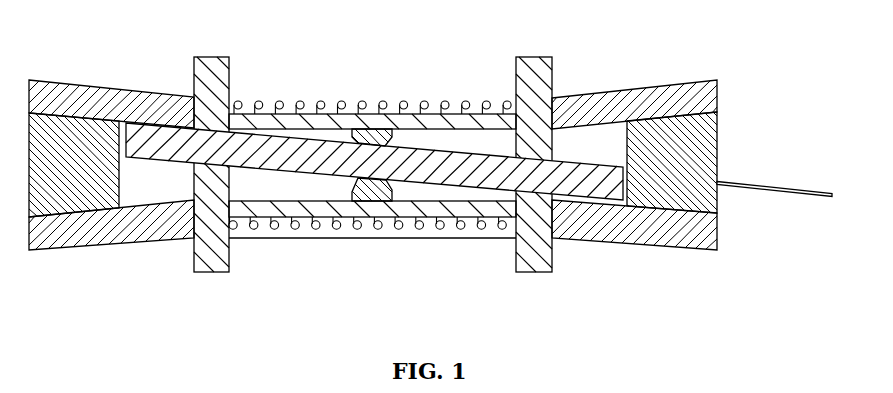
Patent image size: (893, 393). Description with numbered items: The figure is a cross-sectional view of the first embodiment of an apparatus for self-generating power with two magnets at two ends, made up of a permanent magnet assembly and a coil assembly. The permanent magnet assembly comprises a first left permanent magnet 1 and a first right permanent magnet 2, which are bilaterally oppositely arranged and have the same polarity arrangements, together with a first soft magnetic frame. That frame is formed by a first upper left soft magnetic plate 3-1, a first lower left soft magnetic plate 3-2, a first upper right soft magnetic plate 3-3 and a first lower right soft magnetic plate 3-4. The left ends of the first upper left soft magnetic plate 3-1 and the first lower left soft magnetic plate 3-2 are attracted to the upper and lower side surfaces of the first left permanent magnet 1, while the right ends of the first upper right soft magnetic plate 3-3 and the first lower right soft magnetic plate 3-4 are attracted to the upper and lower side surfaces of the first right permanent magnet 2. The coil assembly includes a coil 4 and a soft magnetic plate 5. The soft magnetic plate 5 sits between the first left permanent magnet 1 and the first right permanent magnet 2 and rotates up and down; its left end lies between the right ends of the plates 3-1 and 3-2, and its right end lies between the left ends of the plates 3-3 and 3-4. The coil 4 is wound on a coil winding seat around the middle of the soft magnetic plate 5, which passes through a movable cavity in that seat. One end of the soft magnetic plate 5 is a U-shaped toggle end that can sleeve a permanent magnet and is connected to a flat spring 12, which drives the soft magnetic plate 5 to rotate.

The first left permanent magnet 1 is at (95, 177).
The first right permanent magnet 2 is at (690, 175).
The first upper left soft magnetic plate 3-1 is at (110, 110).
The first lower left soft magnetic plate 3-2 is at (87, 225).
The first upper right soft magnetic plate 3-3 is at (635, 97).
The first lower right soft magnetic plate 3-4 is at (607, 208).
The coil 4 is at (468, 180).
The soft magnetic plate 5 is at (355, 130).
The flat spring 12 is at (758, 192).